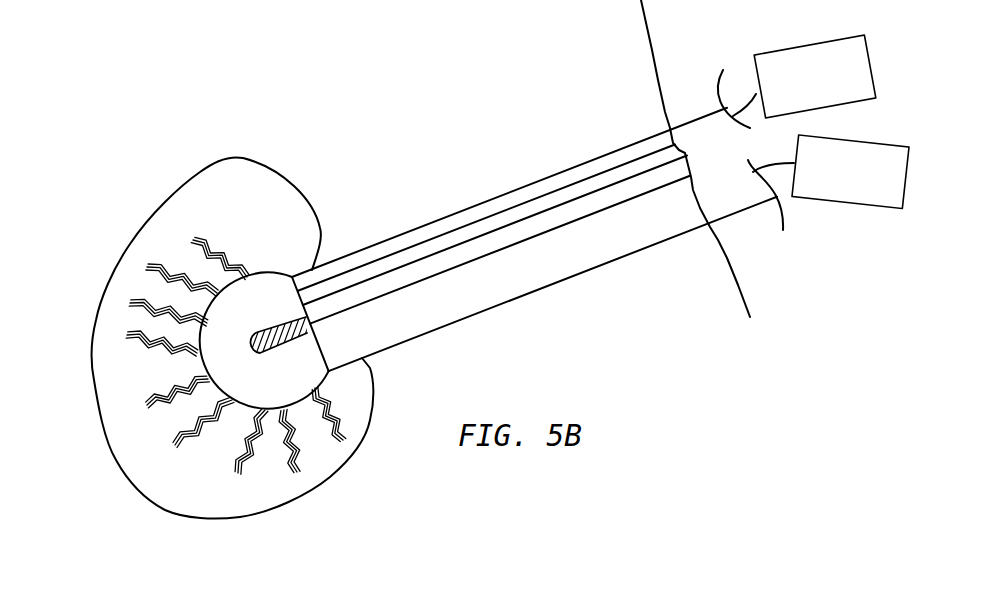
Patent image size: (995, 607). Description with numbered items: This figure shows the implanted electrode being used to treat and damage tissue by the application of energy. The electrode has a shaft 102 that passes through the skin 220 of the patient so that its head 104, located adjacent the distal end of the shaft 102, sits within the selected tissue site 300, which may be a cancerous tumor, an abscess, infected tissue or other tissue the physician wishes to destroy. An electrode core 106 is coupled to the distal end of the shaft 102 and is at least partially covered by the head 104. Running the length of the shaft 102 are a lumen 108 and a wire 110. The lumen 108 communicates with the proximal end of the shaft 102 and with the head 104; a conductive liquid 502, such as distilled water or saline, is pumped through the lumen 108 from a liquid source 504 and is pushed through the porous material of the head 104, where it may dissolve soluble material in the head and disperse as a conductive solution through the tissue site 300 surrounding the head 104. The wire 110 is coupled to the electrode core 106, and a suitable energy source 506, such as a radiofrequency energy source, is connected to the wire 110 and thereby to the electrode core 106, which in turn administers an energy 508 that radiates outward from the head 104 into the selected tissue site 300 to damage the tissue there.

The shaft 102 is at (488, 212).
The head 104 is at (263, 292).
The electrode core 106 is at (265, 352).
The lumen 108 is at (430, 253).
The wire 110 is at (415, 285).
The skin 220 is at (742, 298).
The selected tissue site 300 is at (202, 172).
The liquid 502 is at (295, 475).
The liquid source 504 is at (808, 45).
The energy source 506 is at (848, 203).
The energy 508 is at (148, 403).